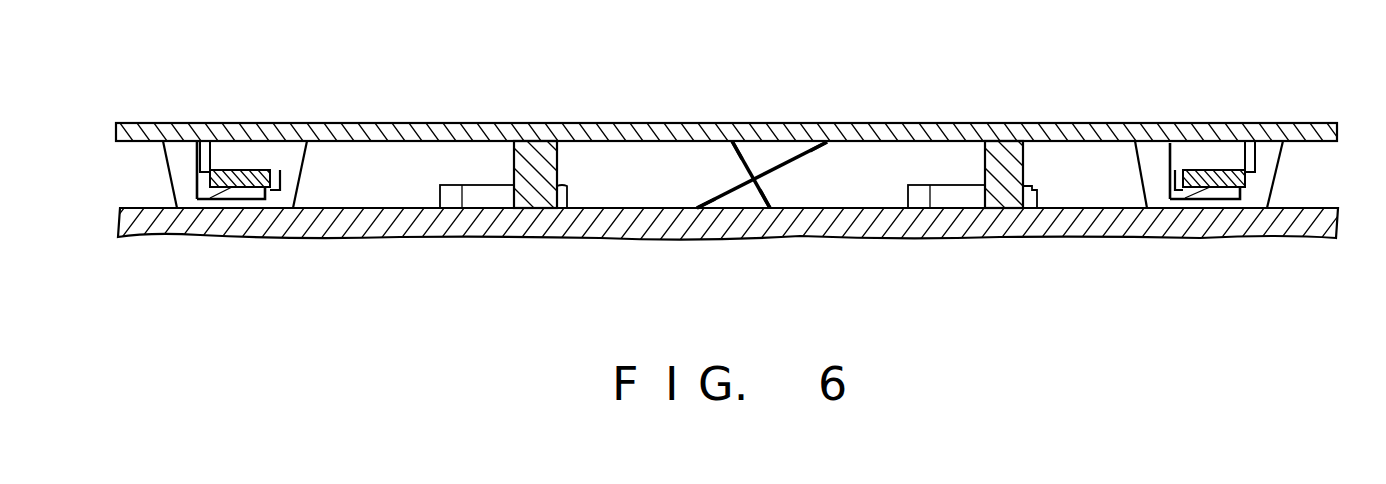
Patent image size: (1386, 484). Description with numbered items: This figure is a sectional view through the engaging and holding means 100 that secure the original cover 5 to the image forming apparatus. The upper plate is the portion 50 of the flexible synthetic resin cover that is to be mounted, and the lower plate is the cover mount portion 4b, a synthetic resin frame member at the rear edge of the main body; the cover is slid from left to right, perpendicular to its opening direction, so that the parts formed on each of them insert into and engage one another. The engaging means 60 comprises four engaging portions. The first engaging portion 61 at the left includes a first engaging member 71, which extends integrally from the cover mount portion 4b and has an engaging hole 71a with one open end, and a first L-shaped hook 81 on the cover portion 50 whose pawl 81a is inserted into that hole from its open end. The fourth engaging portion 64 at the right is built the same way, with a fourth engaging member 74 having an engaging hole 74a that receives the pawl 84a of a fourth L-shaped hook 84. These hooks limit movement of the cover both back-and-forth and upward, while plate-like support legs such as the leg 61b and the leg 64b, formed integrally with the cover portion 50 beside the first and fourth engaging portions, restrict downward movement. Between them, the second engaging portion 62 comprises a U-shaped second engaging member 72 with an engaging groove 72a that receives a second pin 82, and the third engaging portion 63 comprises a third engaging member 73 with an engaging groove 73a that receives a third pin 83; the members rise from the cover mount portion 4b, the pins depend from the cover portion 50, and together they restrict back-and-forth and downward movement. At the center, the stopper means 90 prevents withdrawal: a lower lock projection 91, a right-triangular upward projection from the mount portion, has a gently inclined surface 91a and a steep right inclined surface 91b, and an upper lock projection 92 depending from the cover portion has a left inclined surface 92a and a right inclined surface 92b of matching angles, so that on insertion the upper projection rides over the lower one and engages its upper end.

The original cover 5 is at (1310, 123).
The engaging and holding means 100 is at (137, 177).
The engaging means 60 is at (1285, 173).
The portion to be mounted 50 is at (398, 123).
The cover mount portion 4b is at (408, 200).
The first engaging portion 61 is at (275, 141).
The support leg 61b is at (305, 173).
The first engaging member 71 is at (227, 165).
The engaging hole 71a is at (259, 200).
The first L-shaped hook 81 is at (197, 165).
The pawl 81a is at (218, 202).
The second engaging portion 62 is at (570, 150).
The second engaging member 72 is at (578, 203).
The engaging groove 72a is at (483, 185).
The second pin 82 is at (527, 196).
The stopper means 90 is at (800, 141).
The lower lock projection 91 is at (743, 203).
The inclined surface 91a is at (727, 185).
The right inclined surface 91b is at (772, 193).
The upper lock projection 92 is at (768, 153).
The left inclined surface 92a is at (735, 153).
The right inclined surface 92b is at (815, 150).
The third engaging portion 63 is at (1045, 150).
The third engaging member 73 is at (1037, 196).
The engaging groove 73a is at (950, 186).
The third pin 83 is at (1017, 196).
The fourth engaging portion 64 is at (1243, 150).
The support leg 64b is at (1142, 172).
The fourth engaging member 74 is at (1210, 165).
The engaging hole 74a is at (1236, 200).
The fourth L-shaped hook 84 is at (1168, 162).
The pawl 84a is at (1192, 202).